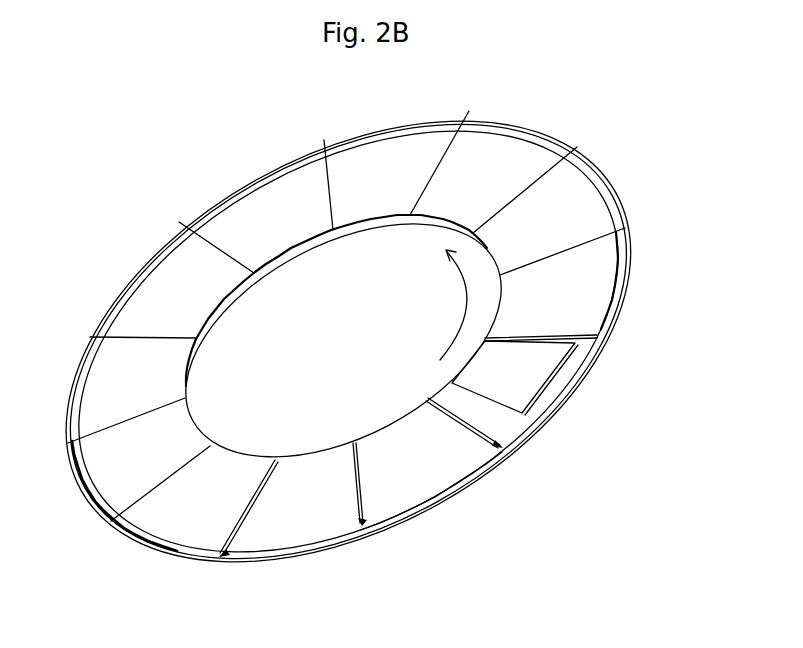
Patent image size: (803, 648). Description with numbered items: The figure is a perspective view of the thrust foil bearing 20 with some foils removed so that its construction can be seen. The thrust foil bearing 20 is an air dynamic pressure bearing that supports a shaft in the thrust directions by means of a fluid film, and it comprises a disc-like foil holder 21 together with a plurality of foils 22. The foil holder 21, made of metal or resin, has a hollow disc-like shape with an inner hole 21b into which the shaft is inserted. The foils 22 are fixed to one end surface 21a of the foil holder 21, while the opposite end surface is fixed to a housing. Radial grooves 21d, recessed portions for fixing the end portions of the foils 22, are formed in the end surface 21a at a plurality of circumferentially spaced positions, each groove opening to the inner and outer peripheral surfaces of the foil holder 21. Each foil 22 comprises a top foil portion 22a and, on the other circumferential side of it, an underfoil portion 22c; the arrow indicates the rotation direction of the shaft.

The thrust foil bearing 20 is at (612, 133).
The foil holder 21 is at (262, 558).
The end surface 21a is at (417, 467).
The inner hole 21b is at (257, 347).
The radial grooves 21d is at (492, 440).
The foils 22 is at (568, 282).
The top foil portion 22a is at (558, 316).
The underfoil portion 22c is at (522, 370).